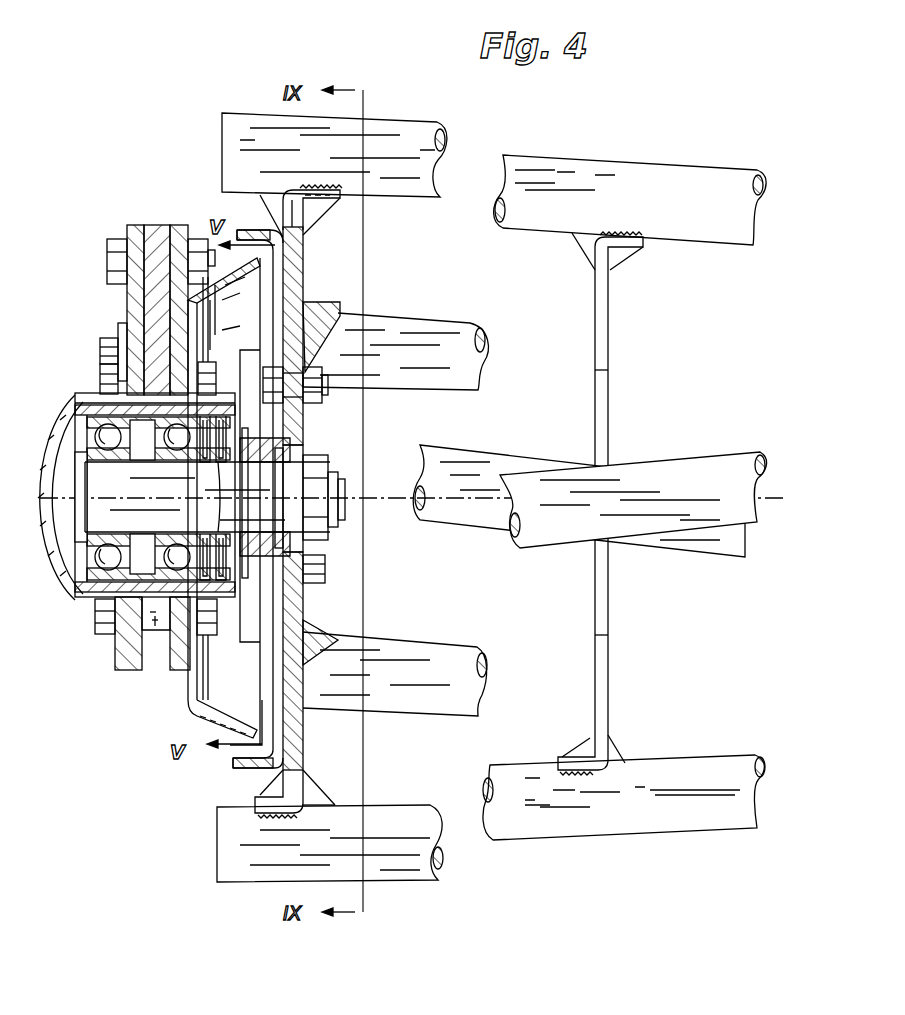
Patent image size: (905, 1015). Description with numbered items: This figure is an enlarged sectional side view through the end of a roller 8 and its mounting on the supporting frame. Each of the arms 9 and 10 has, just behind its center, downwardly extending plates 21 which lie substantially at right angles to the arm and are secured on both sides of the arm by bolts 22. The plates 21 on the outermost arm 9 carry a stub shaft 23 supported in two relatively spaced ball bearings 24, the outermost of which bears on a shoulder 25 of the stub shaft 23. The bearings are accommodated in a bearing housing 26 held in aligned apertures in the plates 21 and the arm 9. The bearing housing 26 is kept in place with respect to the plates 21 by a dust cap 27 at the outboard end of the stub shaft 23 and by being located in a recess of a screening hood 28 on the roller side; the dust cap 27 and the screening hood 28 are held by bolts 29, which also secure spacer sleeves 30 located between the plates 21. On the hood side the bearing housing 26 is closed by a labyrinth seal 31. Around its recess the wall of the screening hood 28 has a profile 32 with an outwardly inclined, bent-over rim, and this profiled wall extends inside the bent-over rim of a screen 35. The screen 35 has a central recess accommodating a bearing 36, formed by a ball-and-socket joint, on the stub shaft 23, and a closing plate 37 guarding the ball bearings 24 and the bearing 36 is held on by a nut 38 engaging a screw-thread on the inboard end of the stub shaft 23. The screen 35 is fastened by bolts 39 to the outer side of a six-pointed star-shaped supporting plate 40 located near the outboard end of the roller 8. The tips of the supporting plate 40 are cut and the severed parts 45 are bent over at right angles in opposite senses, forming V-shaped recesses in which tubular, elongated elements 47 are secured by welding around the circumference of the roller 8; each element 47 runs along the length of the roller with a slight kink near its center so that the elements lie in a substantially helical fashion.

The roller 8 is at (542, 850).
The arm 9 is at (159, 218).
The arm 10 is at (150, 295).
The plates 21 is at (197, 205).
The bolts 22 is at (107, 250).
The stub shaft 23 is at (277, 493).
The ball bearings 24 is at (175, 545).
The shoulder 25 is at (127, 484).
The bearing housing 26 is at (98, 600).
The dust cap 27 is at (70, 555).
The screening hood 28 is at (178, 698).
The bolts 29 is at (98, 378).
The spacer sleeves 30 is at (165, 637).
The labyrinth seal 31 is at (208, 534).
The profile 32 is at (187, 720).
The screen 35 is at (275, 601).
The bearing 36 is at (284, 540).
The closing plate 37 is at (297, 475).
The nut 38 is at (300, 470).
The bolts 39 is at (322, 383).
The supporting plate 40 is at (302, 272).
The bent-over parts 45 is at (312, 181).
The tubular elongated elements 47 is at (517, 167).